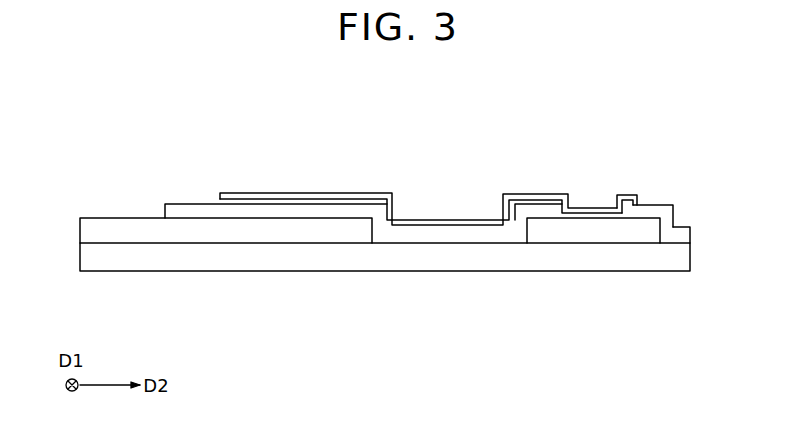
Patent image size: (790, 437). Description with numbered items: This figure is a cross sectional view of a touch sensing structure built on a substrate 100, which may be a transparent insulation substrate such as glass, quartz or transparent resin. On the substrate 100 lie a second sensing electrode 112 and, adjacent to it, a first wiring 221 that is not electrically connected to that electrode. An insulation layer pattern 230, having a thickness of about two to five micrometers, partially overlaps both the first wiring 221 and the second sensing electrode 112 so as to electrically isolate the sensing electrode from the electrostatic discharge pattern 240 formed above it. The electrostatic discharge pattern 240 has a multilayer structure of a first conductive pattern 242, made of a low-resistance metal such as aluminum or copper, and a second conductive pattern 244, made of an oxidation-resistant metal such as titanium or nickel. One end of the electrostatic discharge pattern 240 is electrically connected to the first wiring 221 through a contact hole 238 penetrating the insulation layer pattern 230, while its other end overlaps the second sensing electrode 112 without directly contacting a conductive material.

The substrate 100 is at (82, 255).
The second sensing electrode 112 is at (82, 226).
The first wiring 221 is at (651, 235).
The insulation layer pattern 230 is at (194, 210).
The contact hole 238 is at (642, 211).
The electrostatic discharge pattern 240 is at (421, 165).
The first conductive pattern 242 is at (498, 136).
The second conductive pattern 244 is at (519, 194).